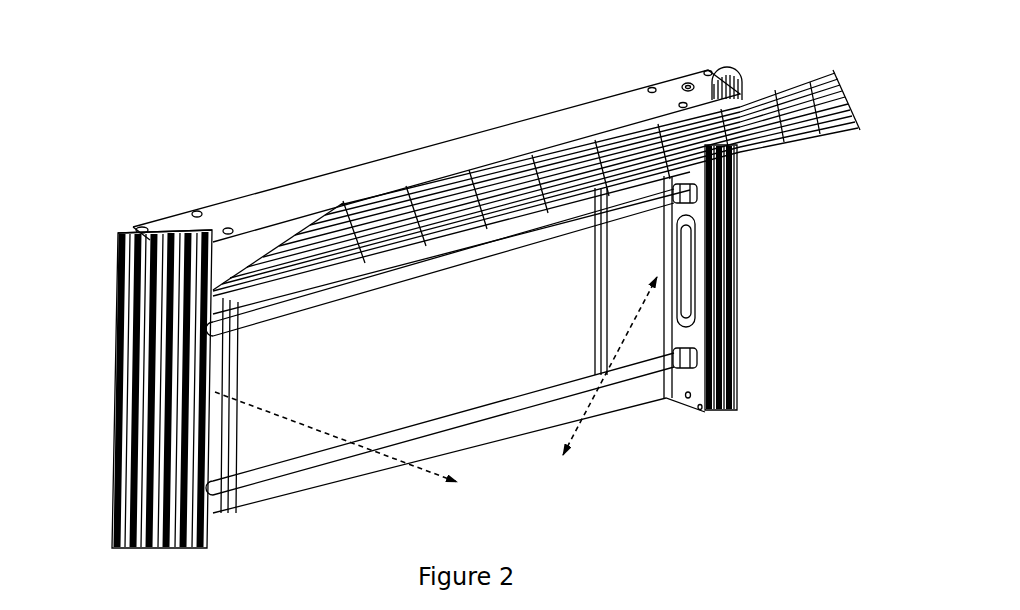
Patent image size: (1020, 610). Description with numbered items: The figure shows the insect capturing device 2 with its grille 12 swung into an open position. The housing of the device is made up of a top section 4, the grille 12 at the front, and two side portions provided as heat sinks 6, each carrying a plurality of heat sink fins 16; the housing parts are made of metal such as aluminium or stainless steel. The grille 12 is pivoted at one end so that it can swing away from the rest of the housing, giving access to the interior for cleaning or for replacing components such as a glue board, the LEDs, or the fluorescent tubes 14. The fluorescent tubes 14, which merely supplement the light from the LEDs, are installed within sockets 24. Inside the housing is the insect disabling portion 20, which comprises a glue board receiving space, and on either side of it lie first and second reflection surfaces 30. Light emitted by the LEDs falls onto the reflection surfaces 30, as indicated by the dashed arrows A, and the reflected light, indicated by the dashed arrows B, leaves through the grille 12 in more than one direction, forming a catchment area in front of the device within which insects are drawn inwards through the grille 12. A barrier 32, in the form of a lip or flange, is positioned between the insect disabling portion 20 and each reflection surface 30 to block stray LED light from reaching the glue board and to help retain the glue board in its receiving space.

The insect capturing device 2 is at (265, 172).
The top section 4 is at (420, 172).
The heat sink 6 is at (134, 475).
The grille 12 is at (823, 112).
The fluorescent tube 14 is at (560, 227).
The heat sink fin 16 is at (148, 249).
The insect disabling portion 20 is at (503, 298).
The socket 24 is at (698, 193).
The reflection surface 30 is at (212, 364).
The barrier 32 is at (238, 452).
The incident light arrows A is at (611, 350).
The reflected light arrows B is at (400, 422).